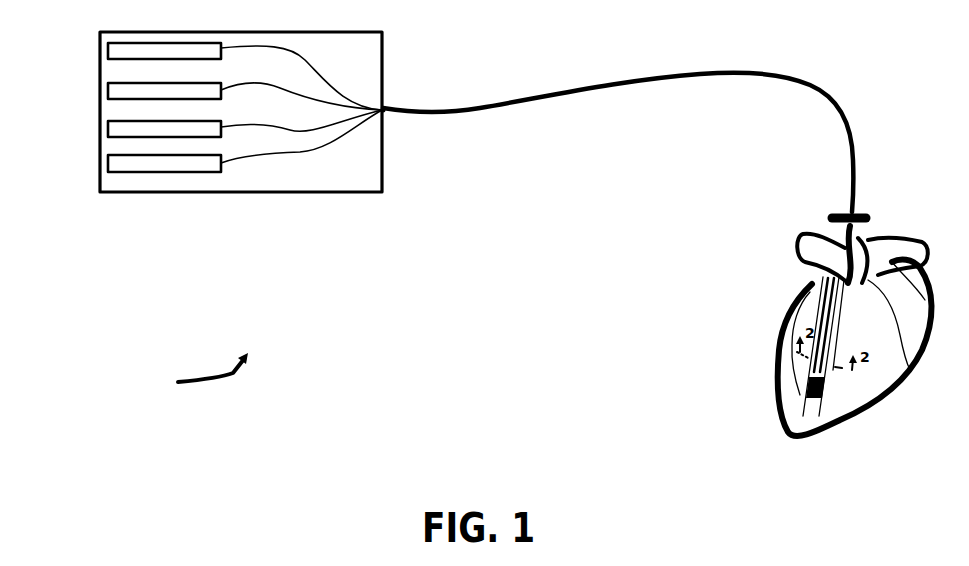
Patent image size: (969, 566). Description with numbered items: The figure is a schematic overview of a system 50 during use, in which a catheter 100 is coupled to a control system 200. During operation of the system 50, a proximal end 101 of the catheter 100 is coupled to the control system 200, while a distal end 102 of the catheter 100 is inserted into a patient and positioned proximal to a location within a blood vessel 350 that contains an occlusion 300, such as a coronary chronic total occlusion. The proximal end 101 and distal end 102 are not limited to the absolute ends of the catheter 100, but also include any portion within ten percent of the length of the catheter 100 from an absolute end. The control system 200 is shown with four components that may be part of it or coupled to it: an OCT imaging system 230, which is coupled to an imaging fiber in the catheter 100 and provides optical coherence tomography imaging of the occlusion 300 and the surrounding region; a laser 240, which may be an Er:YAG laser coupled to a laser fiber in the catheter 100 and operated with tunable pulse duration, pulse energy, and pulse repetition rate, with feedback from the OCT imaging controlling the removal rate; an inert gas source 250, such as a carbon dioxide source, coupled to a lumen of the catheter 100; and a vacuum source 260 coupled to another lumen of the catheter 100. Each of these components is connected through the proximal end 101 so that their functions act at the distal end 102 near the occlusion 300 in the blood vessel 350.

The system 50 is at (197, 374).
The catheter 100 is at (614, 90).
The proximal end 101 is at (385, 113).
The distal end 102 is at (808, 368).
The control system 200 is at (345, 193).
The OCT imaging system 230 is at (100, 51).
The laser 240 is at (100, 91).
The inert gas source 250 is at (100, 130).
The vacuum source 260 is at (100, 164).
The occlusion 300 is at (808, 393).
The blood vessel 350 is at (842, 290).